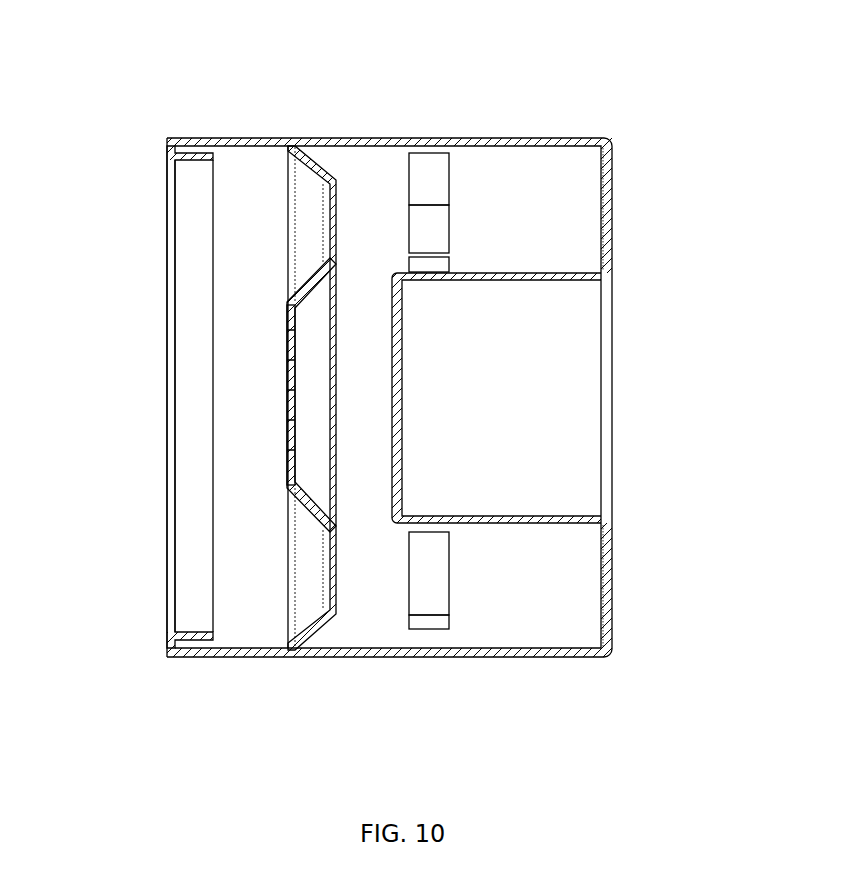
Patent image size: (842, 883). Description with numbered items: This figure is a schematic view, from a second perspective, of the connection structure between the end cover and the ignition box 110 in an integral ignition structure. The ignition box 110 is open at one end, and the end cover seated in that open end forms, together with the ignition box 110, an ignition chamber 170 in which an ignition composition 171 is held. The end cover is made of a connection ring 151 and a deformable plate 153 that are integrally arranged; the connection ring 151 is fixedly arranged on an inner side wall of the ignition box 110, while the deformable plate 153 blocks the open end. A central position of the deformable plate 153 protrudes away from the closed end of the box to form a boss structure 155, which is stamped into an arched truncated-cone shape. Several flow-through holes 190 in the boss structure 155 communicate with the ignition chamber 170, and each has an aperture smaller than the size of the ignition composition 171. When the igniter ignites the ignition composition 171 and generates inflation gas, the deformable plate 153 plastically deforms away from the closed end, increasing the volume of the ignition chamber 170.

The ignition box 110 is at (515, 653).
The connection ring 151 is at (250, 643).
The deformable plate 153 is at (336, 212).
The boss structure 155 is at (288, 268).
The ignition chamber 170 is at (552, 192).
The ignition composition 171 is at (419, 582).
The flow-through holes 190 is at (288, 395).